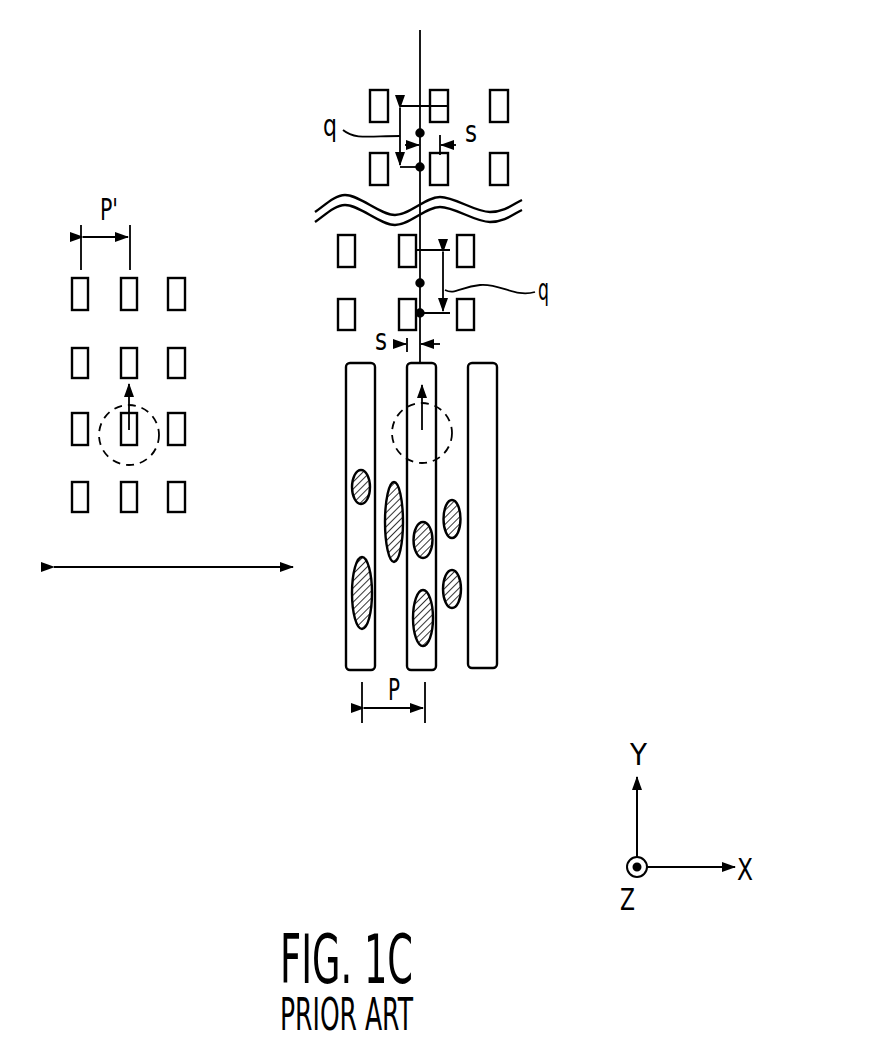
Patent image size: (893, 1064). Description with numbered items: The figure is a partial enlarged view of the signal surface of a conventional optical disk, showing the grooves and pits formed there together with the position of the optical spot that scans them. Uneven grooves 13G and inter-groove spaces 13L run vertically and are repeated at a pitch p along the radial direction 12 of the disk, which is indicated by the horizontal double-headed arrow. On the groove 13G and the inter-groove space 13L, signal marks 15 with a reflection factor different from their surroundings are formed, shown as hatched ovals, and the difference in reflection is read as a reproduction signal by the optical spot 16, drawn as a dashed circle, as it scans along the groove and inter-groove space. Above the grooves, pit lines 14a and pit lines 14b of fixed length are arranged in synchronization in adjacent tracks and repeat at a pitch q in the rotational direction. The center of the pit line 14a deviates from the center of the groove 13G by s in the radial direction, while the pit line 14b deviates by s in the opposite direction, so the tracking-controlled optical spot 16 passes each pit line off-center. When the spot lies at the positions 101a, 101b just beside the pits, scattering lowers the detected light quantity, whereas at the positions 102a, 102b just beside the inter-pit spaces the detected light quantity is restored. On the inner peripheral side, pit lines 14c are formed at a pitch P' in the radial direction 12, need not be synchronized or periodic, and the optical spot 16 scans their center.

The radial direction 12 is at (215, 567).
The groove 13G is at (357, 643).
The inter-groove space 13L is at (390, 653).
The pit line 14a is at (399, 310).
The pit line 14b is at (449, 88).
The pit line 14c is at (121, 505).
The signal mark 15 is at (462, 583).
The optical spot 16 is at (453, 430).
The position just beside the pit 101a is at (420, 313).
The position just beside the pit 101b is at (420, 167).
The position just beside the inter-pit space 102a is at (445, 273).
The position just beside the inter-pit space 102b is at (420, 133).